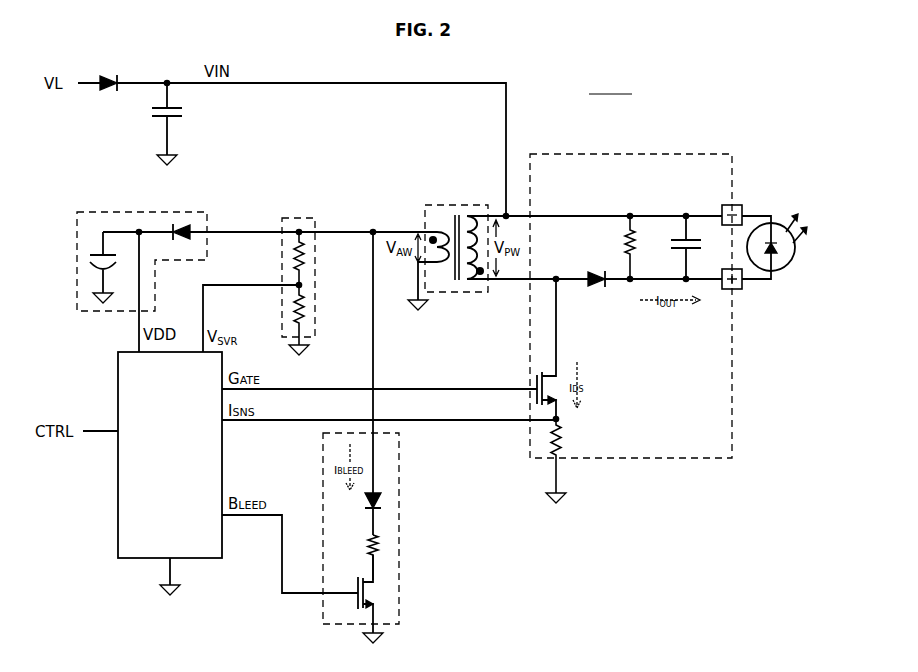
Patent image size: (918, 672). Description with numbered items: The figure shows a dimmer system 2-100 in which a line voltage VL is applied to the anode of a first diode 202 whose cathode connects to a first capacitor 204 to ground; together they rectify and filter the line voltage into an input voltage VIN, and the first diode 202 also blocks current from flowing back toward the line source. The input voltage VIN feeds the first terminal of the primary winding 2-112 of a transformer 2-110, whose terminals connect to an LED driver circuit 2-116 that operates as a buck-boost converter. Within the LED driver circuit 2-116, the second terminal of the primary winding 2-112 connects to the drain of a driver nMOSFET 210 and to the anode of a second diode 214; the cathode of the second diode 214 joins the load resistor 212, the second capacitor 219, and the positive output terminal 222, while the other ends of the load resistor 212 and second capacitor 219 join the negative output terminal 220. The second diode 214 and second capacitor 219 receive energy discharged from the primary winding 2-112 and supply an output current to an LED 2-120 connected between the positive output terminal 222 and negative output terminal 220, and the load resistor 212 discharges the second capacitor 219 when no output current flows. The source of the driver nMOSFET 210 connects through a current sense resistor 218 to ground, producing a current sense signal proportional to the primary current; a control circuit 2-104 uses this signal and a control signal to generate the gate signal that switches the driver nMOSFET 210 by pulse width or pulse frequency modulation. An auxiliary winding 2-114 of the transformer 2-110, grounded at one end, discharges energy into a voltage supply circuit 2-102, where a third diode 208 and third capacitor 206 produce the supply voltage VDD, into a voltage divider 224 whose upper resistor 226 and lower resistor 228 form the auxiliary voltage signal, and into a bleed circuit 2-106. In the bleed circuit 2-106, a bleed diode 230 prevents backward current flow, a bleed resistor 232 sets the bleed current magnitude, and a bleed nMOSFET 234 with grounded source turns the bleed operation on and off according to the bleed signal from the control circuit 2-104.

The dimmer system 2-100 is at (611, 86).
The first diode 202 is at (118, 75).
The first capacitor 204 is at (160, 118).
The voltage supply circuit 2-102 is at (110, 212).
The third capacitor 206 is at (93, 255).
The third diode 208 is at (184, 224).
The voltage divider 224 is at (295, 218).
The upper resistor 226 is at (305, 258).
The lower resistor 228 is at (306, 312).
The control circuit 2-104 is at (118, 385).
The transformer 2-110 is at (455, 215).
The primary winding 2-112 is at (474, 215).
The auxiliary winding 2-114 is at (438, 232).
The LED driver circuit 2-116 is at (686, 153).
The load resistor 212 is at (625, 228).
The second capacitor 219 is at (680, 236).
The second diode 214 is at (591, 290).
The negative output terminal 220 is at (743, 205).
The positive output terminal 222 is at (742, 289).
The LED 2-120 is at (780, 267).
The driver nMOSFET 210 is at (535, 377).
The current sense resistor 218 is at (560, 438).
The bleed circuit 2-106 is at (400, 552).
The bleed diode 230 is at (382, 500).
The bleed resistor 232 is at (380, 542).
The bleed nMOSFET 234 is at (370, 590).